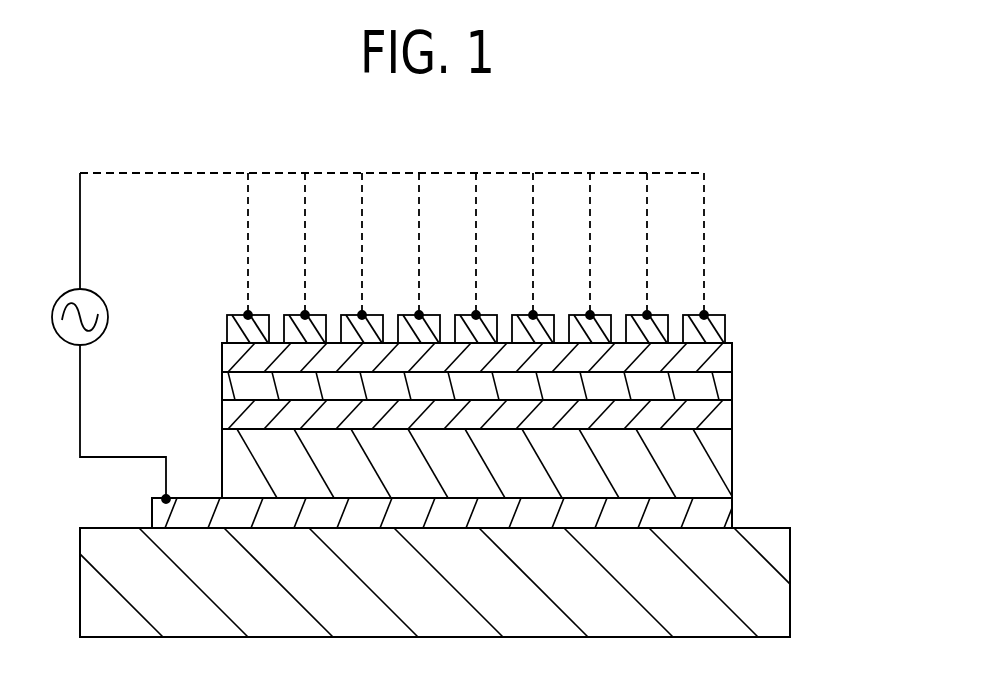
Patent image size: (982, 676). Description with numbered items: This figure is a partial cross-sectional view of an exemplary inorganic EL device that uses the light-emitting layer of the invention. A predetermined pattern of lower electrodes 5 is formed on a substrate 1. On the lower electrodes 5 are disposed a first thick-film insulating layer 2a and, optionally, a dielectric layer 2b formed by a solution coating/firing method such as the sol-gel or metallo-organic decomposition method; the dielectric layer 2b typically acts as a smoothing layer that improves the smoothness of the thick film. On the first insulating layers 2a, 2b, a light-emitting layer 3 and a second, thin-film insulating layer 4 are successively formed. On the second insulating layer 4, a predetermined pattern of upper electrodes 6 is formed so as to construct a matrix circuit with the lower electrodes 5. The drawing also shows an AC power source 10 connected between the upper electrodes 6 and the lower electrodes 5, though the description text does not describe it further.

The substrate 1 is at (775, 597).
The lower electrodes 5 is at (728, 510).
The first thick-film insulating layer 2a is at (733, 470).
The dielectric layer 2b is at (723, 417).
The light-emitting layer 3 is at (727, 383).
The second insulating layer 4 is at (722, 357).
The upper electrodes 6 is at (713, 322).
The AC power source 10 is at (378, 338).